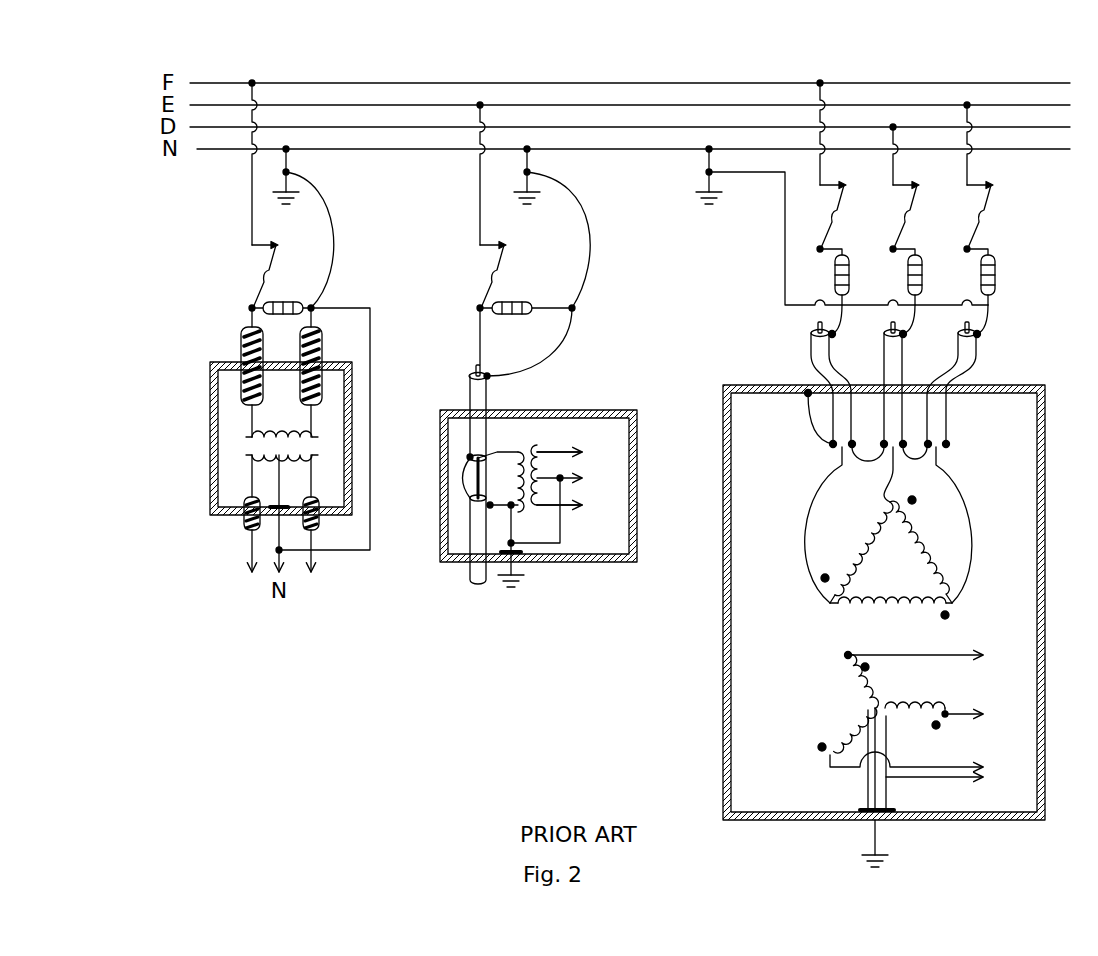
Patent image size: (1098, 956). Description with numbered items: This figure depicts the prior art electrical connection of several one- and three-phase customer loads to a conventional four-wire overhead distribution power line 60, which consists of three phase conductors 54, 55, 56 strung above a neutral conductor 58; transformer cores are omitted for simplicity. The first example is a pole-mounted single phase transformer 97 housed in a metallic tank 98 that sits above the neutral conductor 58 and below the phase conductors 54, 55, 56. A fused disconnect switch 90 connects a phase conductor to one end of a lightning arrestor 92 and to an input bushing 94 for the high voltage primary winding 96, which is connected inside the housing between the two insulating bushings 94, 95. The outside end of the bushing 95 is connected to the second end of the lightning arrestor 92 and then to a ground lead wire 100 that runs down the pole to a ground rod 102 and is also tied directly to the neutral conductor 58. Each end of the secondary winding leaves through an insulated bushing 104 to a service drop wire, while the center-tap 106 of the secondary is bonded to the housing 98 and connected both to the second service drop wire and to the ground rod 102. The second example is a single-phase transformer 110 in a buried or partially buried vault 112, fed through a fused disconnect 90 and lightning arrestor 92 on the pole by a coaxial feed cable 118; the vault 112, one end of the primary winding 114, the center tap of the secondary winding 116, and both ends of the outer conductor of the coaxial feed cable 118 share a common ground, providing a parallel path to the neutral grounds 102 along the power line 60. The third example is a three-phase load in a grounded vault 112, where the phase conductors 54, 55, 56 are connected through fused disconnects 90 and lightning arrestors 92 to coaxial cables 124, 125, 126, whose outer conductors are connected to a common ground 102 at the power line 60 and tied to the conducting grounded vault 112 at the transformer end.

The phase conductor 54 is at (265, 127).
The phase conductor 55 is at (320, 105).
The phase conductor 56 is at (390, 83).
The neutral conductor 58 is at (392, 152).
The power line 60 is at (455, 75).
The fused disconnect switch 90 is at (262, 272).
The lightning arrestor 92 is at (275, 300).
The input bushing 94 is at (242, 336).
The bushing 95 is at (320, 345).
The primary winding 96 is at (305, 432).
The transformer 97 is at (206, 428).
The transformer housing 98 is at (210, 394).
The ground lead wire 100 is at (290, 162).
The ground rod 102 is at (302, 198).
The insulated bushing 104 is at (245, 517).
The center-tap 106 is at (281, 487).
The single-phase transformer 110 is at (585, 540).
The vault 112 is at (588, 410).
The primary winding 114 is at (503, 456).
The secondary winding 116 is at (565, 477).
The coaxial feed cable 118 is at (470, 398).
The coaxial cable 124 is at (903, 362).
The coaxial cable 125 is at (975, 358).
The coaxial cable 126 is at (812, 358).